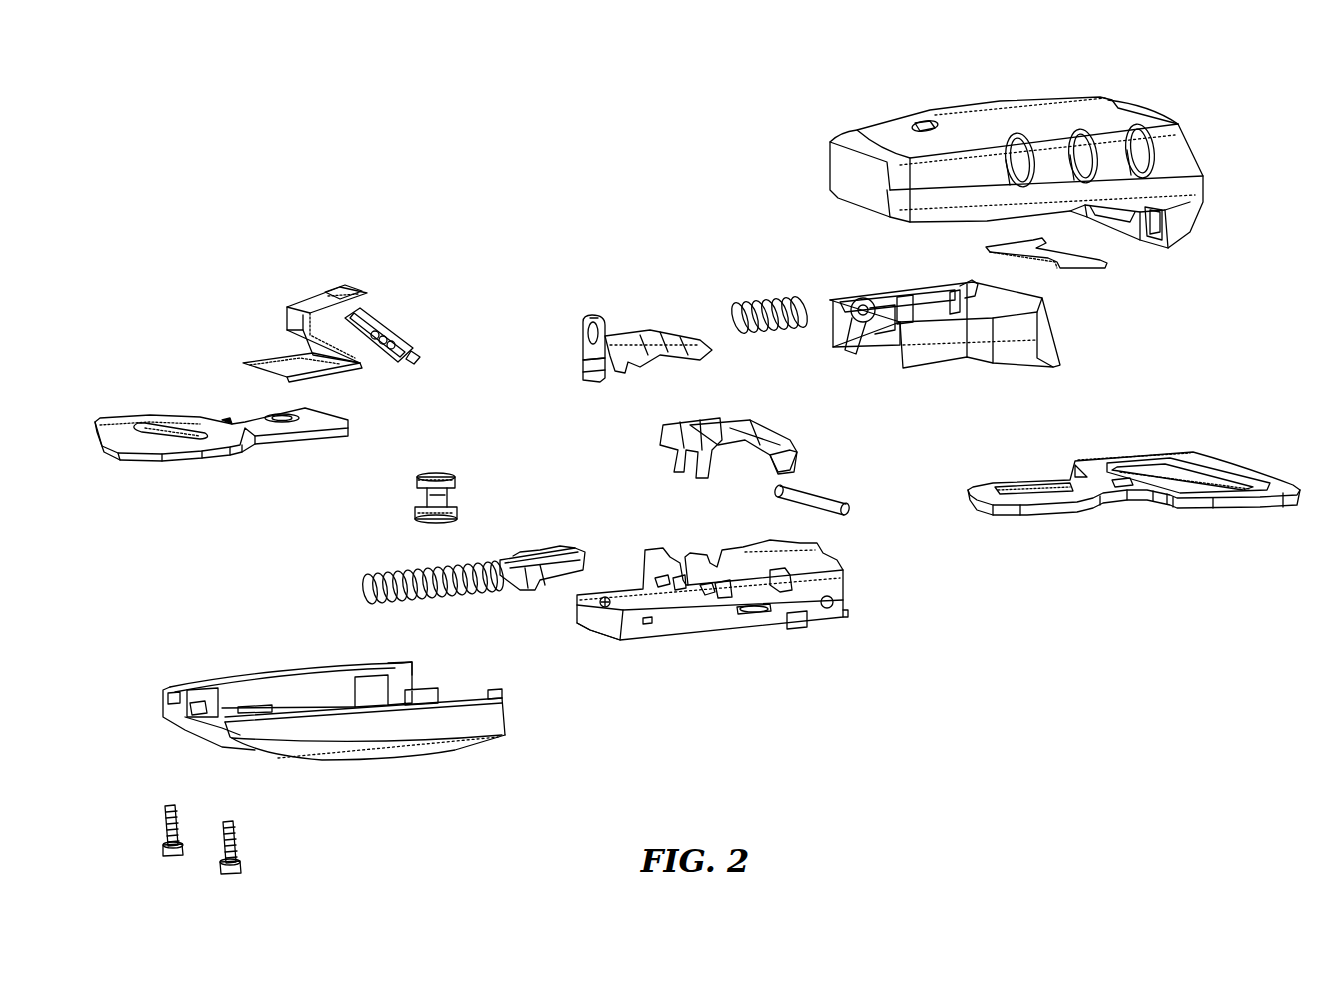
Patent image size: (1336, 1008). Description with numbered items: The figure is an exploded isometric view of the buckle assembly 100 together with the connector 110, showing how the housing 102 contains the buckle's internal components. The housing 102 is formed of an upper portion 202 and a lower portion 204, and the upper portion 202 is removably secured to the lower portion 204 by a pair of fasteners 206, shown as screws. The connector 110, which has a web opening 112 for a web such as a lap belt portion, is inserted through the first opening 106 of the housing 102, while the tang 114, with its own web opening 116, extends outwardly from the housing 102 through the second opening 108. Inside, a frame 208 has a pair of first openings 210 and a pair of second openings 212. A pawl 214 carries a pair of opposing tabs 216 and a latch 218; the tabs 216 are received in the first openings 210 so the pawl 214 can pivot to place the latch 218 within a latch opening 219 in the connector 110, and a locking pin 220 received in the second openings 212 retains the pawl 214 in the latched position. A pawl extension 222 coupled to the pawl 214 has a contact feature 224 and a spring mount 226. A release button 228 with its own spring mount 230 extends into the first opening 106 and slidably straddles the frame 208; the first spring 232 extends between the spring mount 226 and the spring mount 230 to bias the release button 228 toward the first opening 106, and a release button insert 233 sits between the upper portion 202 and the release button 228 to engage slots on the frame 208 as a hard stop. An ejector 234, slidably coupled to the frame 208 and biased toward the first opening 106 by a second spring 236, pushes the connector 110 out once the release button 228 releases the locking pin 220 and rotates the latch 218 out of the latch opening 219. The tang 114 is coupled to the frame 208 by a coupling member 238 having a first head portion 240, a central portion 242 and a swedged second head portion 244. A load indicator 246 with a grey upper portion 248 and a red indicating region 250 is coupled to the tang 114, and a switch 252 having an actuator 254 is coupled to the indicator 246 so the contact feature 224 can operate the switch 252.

The buckle assembly 100 is at (166, 166).
The housing 102 is at (1020, 106).
The first opening 106 is at (1140, 228).
The second opening 108 is at (186, 716).
The connector 110 is at (1100, 460).
The web opening 112 is at (1158, 460).
The tang 114 is at (130, 420).
The web opening 116 is at (190, 432).
The upper portion 202 is at (905, 125).
The lower portion 204 is at (342, 752).
The fasteners 206 is at (175, 815).
The frame 208 is at (665, 622).
The first openings 210 is at (665, 585).
The second openings 212 is at (790, 575).
The pawl 214 is at (712, 425).
The tabs 216 is at (672, 440).
The latch 218 is at (792, 452).
The latch opening 219 is at (1035, 487).
The locking pin 220 is at (832, 500).
The pawl extension 222 is at (622, 340).
The contact feature 224 is at (584, 378).
The spring mount 226 is at (613, 312).
The release button 228 is at (948, 356).
The spring mount 230 is at (870, 300).
The first spring 232 is at (766, 300).
The release button insert 233 is at (1060, 262).
The ejector 234 is at (560, 548).
The second spring 236 is at (455, 596).
The coupling member 238 is at (436, 474).
The first head portion 240 is at (412, 510).
The central portion 242 is at (450, 496).
The second head portion 244 is at (412, 482).
The load indicator 246 is at (278, 365).
The upper portion 248 is at (318, 298).
The indicating region 250 is at (346, 291).
The switch 252 is at (390, 332).
The actuator 254 is at (425, 352).